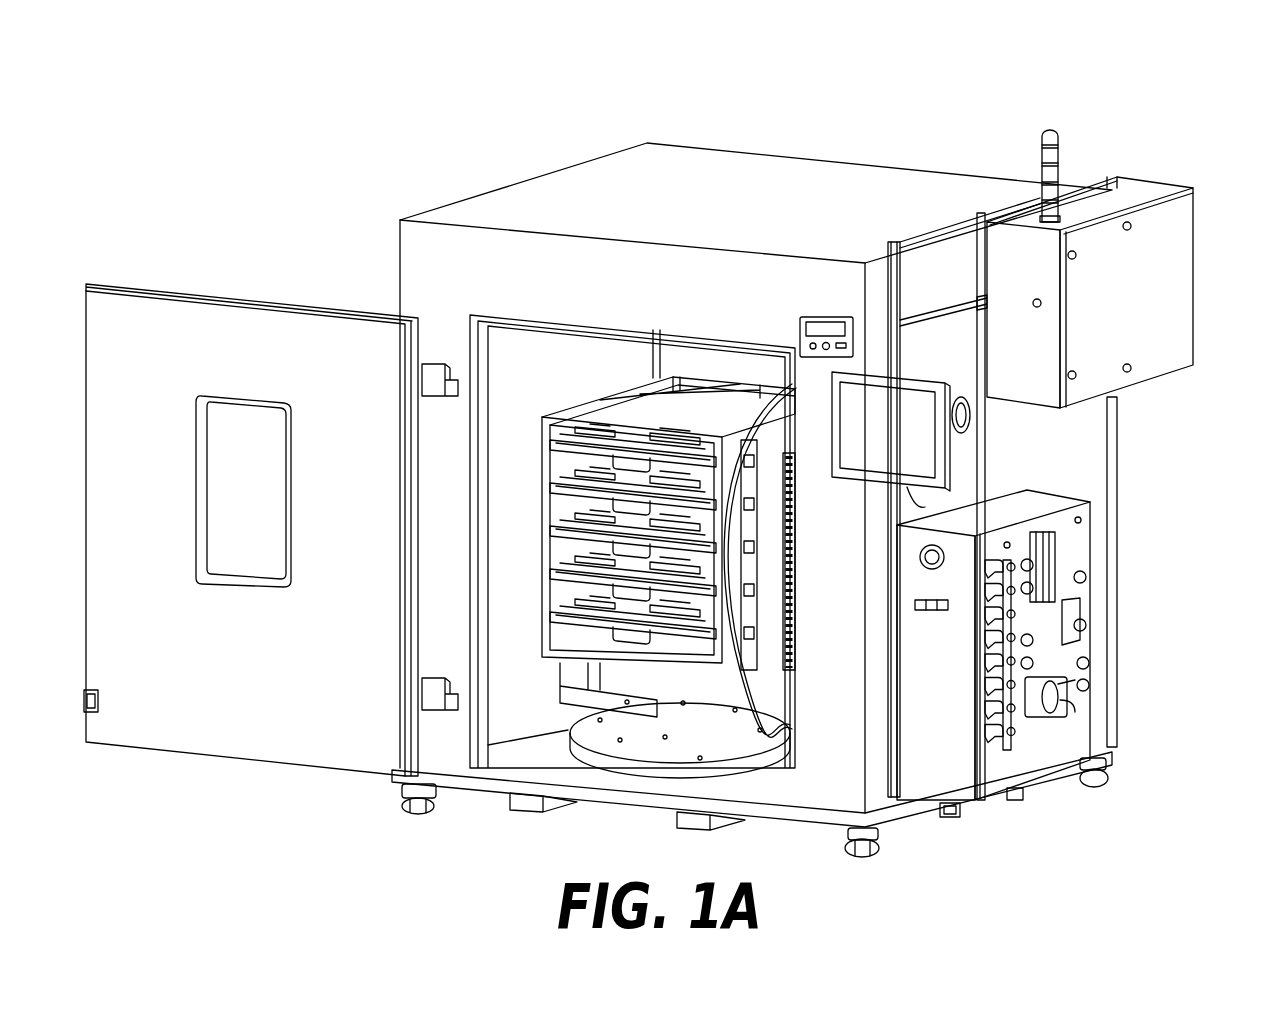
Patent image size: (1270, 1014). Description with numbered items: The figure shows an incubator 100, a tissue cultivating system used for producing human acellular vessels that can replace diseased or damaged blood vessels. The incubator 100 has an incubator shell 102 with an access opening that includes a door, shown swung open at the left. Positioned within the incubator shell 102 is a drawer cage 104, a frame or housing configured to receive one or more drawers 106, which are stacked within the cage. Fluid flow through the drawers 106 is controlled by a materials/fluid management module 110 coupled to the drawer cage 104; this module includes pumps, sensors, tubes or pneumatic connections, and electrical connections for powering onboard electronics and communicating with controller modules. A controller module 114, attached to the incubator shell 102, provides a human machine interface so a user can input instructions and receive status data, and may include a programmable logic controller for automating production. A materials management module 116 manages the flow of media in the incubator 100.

The incubator 100 is at (766, 66).
The incubator shell 102 is at (427, 262).
The drawer cage 104 is at (595, 405).
The drawers 106 is at (563, 458).
The materials/fluid management module 110 is at (762, 557).
The controller module 114 is at (1165, 230).
The materials management module 116 is at (1040, 627).